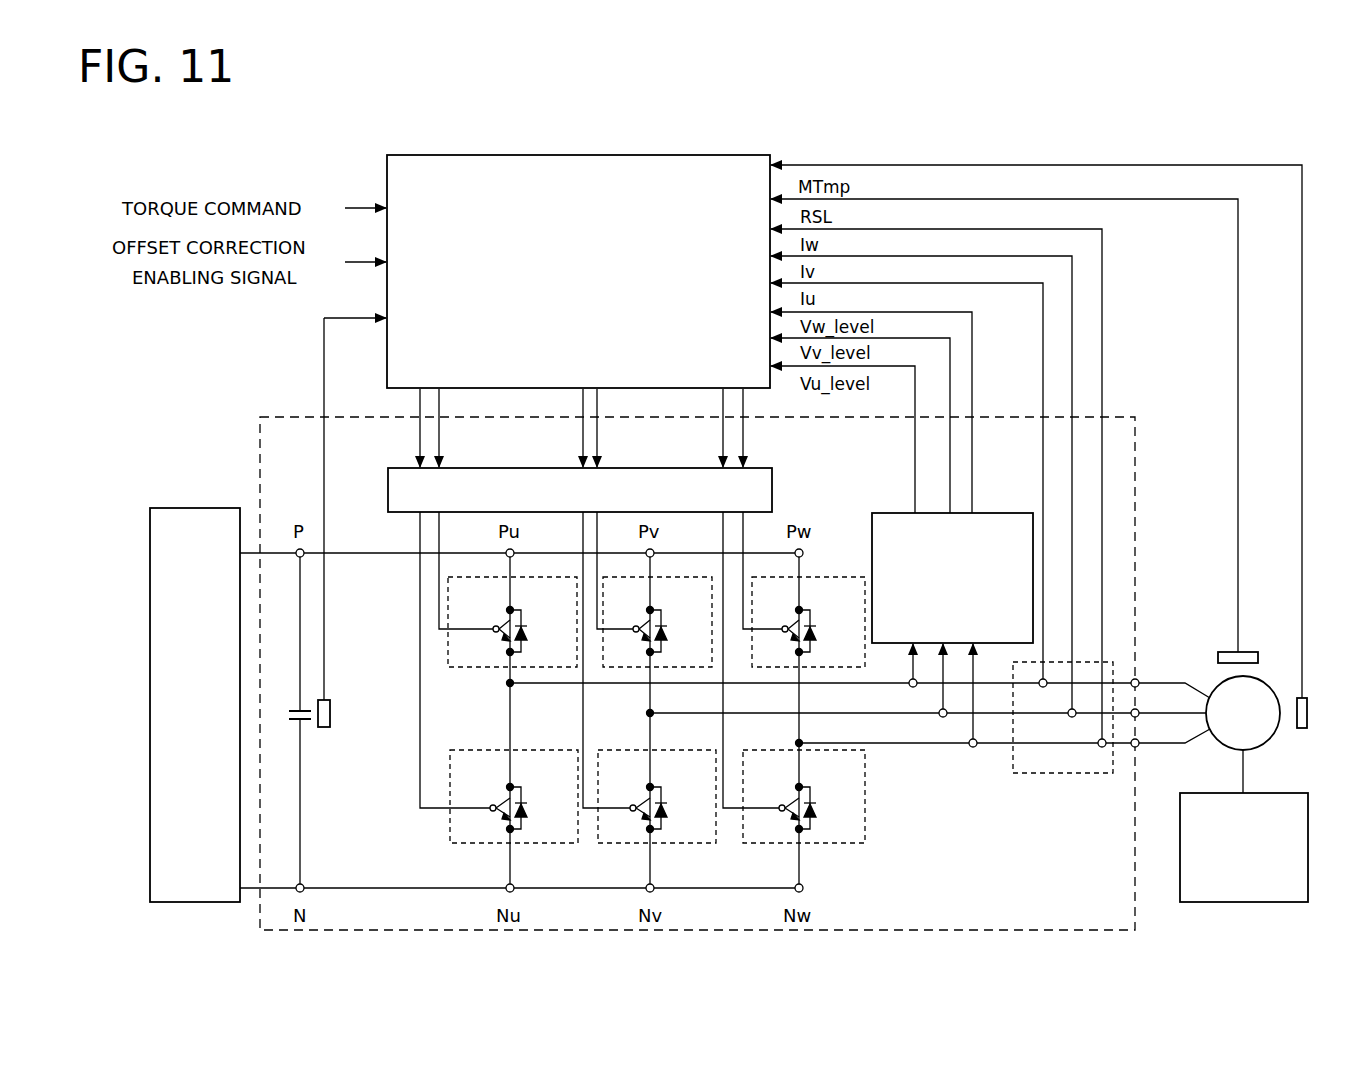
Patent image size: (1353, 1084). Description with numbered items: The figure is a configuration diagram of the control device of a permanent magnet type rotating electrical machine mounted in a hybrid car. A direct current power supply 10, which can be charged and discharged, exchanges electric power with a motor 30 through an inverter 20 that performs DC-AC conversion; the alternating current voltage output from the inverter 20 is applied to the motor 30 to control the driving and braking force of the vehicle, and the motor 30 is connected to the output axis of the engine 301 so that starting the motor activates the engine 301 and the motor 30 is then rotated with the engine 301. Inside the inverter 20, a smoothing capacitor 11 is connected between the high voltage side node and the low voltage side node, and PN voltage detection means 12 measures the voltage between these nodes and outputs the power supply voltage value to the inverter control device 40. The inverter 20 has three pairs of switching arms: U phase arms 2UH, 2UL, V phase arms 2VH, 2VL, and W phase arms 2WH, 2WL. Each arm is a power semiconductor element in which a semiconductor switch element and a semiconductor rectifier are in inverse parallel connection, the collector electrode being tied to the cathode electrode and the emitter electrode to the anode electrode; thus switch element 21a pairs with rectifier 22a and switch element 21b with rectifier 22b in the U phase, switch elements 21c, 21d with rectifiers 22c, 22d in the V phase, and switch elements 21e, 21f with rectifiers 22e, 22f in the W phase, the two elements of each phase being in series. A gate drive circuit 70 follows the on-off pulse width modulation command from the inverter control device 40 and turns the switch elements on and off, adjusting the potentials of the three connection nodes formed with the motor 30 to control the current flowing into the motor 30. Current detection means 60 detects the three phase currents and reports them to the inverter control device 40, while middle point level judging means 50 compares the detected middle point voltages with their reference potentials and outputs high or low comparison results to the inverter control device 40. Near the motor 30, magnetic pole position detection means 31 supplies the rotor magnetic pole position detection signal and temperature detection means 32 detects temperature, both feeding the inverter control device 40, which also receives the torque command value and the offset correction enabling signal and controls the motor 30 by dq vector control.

The direct current power supply 10 is at (237, 508).
The smoothing capacitor 11 is at (306, 722).
The PN voltage detection means 12 is at (331, 706).
The inverter 20 is at (444, 931).
The semiconductor switch element 21a is at (484, 627).
The semiconductor switch element 21b is at (484, 804).
The semiconductor switch element 21c is at (630, 627).
The semiconductor switch element 21d is at (630, 804).
The semiconductor switch element 21e is at (779, 627).
The semiconductor switch element 21f is at (779, 804).
The semiconductor rectifier 22a is at (524, 620).
The semiconductor rectifier 22b is at (524, 798).
The semiconductor rectifier 22c is at (664, 620).
The semiconductor rectifier 22d is at (664, 798).
The semiconductor rectifier 22e is at (812, 620).
The semiconductor rectifier 22f is at (812, 798).
The U phase upper arm side power semiconductor element 2UH is at (512, 612).
The U phase lower arm side power semiconductor element 2UL is at (526, 816).
The V phase upper arm side power semiconductor element 2VH is at (657, 612).
The V phase lower arm side power semiconductor element 2VL is at (667, 816).
The W phase upper arm side power semiconductor element 2WH is at (808, 612).
The W phase lower arm side power semiconductor element 2WL is at (815, 820).
The motor 30 is at (1263, 685).
The magnetic pole position detection means 31 is at (1218, 652).
The temperature detection means 32 is at (1304, 730).
The inverter control device 40 is at (385, 160).
The middle point level judging means 50 is at (988, 512).
The current detection means 60 is at (1065, 774).
The gate drive circuit 70 is at (773, 468).
The engine 301 is at (1208, 903).